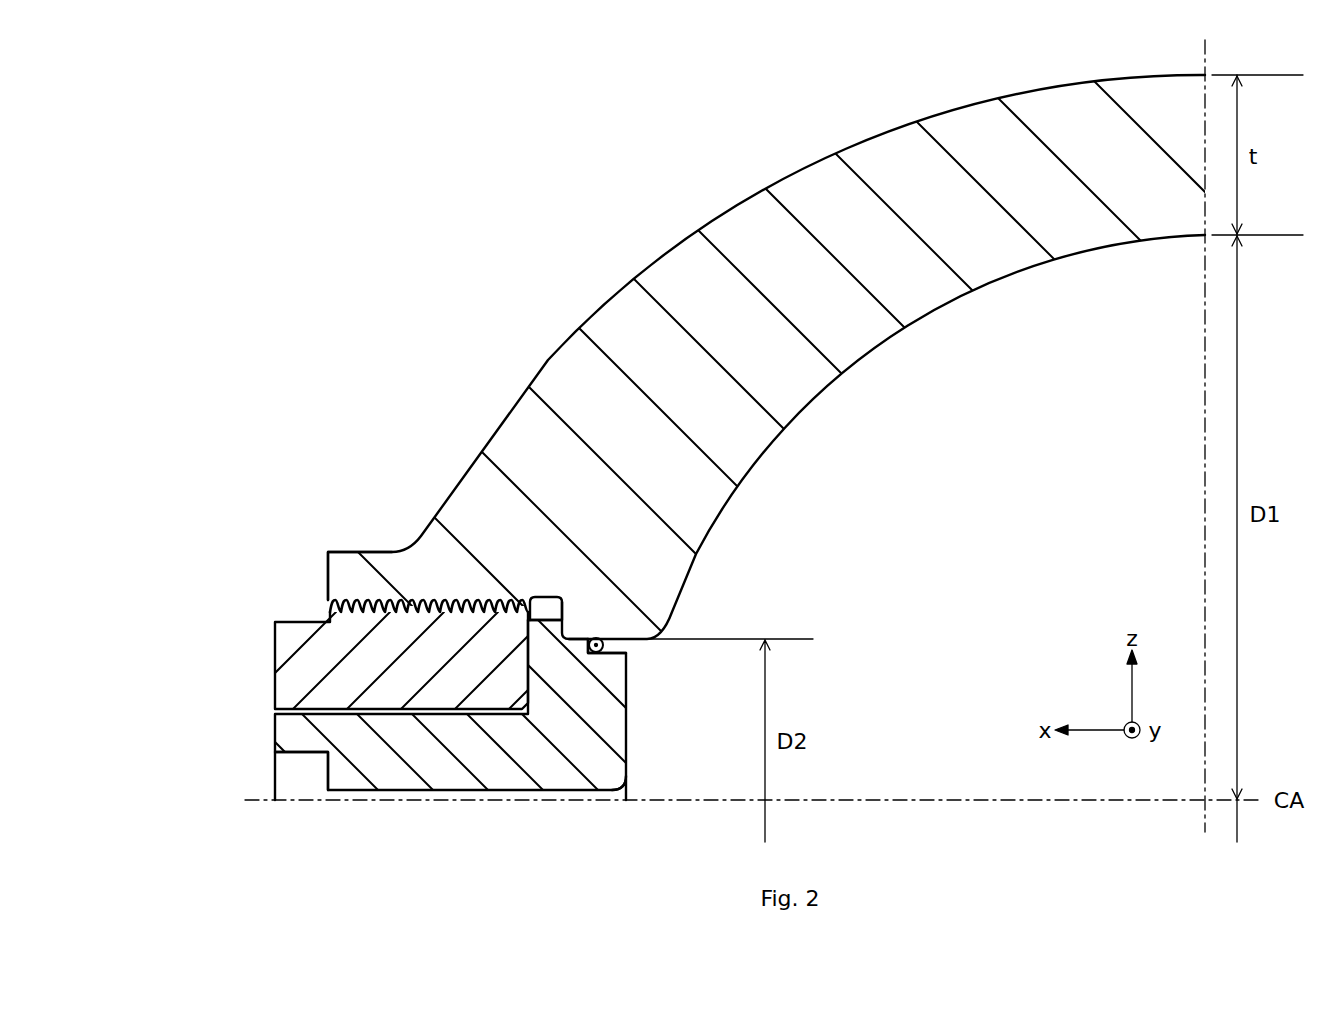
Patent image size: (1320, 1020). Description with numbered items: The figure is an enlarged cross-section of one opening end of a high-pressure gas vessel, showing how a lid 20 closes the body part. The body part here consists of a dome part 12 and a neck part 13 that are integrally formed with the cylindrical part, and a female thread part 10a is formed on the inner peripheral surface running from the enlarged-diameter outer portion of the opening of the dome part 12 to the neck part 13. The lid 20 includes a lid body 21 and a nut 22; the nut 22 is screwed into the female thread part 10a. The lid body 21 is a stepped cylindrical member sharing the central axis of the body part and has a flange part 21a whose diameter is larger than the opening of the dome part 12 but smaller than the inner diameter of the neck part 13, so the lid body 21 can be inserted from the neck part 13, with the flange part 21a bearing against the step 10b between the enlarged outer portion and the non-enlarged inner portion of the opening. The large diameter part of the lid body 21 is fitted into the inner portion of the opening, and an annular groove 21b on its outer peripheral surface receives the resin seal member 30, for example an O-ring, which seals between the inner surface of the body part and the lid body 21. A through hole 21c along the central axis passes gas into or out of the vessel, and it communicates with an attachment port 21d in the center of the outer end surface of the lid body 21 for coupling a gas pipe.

The dome part 12 is at (826, 161).
The neck part 13 is at (392, 556).
The female thread part 10a is at (342, 600).
The step 10b is at (551, 597).
The resin seal member 30 is at (596, 638).
The lid 20 is at (203, 672).
The lid body 21 is at (275, 728).
The flange part 21a is at (533, 600).
The annular groove 21b is at (625, 645).
The through hole 21c is at (612, 800).
The attachment port 21d is at (290, 752).
The nut 22 is at (275, 686).